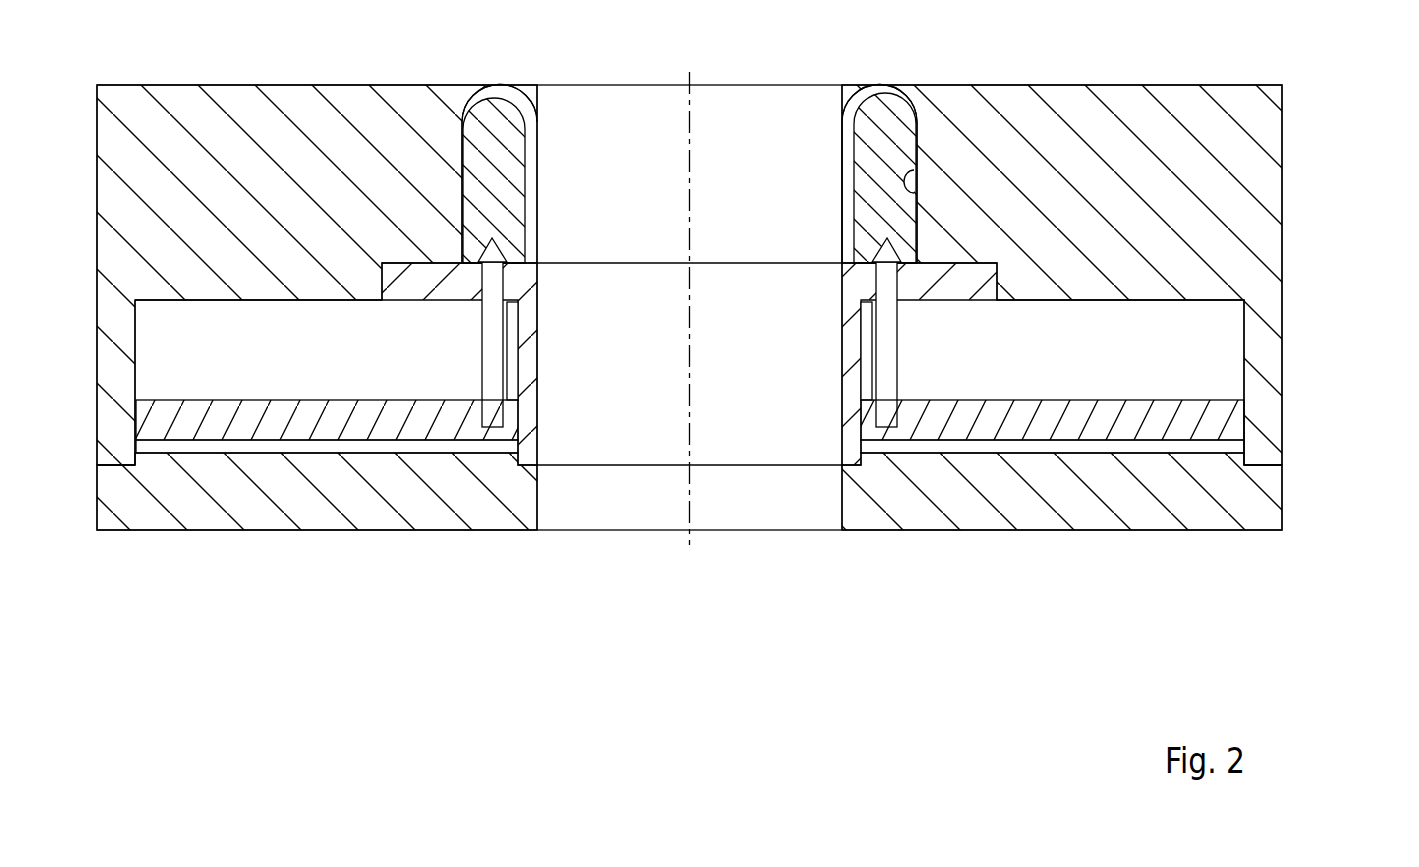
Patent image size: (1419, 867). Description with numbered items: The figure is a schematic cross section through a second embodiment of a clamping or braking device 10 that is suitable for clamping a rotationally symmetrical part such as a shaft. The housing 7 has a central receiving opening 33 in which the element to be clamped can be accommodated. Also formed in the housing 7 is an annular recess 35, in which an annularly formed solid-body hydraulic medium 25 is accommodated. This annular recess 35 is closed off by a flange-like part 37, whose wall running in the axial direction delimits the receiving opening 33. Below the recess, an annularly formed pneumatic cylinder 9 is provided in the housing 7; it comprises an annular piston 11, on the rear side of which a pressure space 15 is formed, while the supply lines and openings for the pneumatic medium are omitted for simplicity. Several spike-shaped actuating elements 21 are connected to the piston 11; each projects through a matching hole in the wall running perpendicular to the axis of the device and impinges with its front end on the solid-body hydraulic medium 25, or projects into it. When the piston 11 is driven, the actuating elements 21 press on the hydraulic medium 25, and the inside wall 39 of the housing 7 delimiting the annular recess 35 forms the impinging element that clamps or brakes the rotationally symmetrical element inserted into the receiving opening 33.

The housing 7 is at (1138, 105).
The pneumatic cylinder 9 is at (1236, 374).
The clamping or braking device 10 is at (925, 60).
The annular piston 11 is at (1018, 418).
The pressure space 15 is at (987, 448).
The spike-shaped actuating element 21 is at (482, 338).
The solid-body hydraulic medium 25 is at (880, 148).
The receiving opening 33 is at (759, 92).
The annular recess 35 is at (915, 168).
The flange-like part 37 is at (855, 287).
The inside wall 39 is at (530, 172).